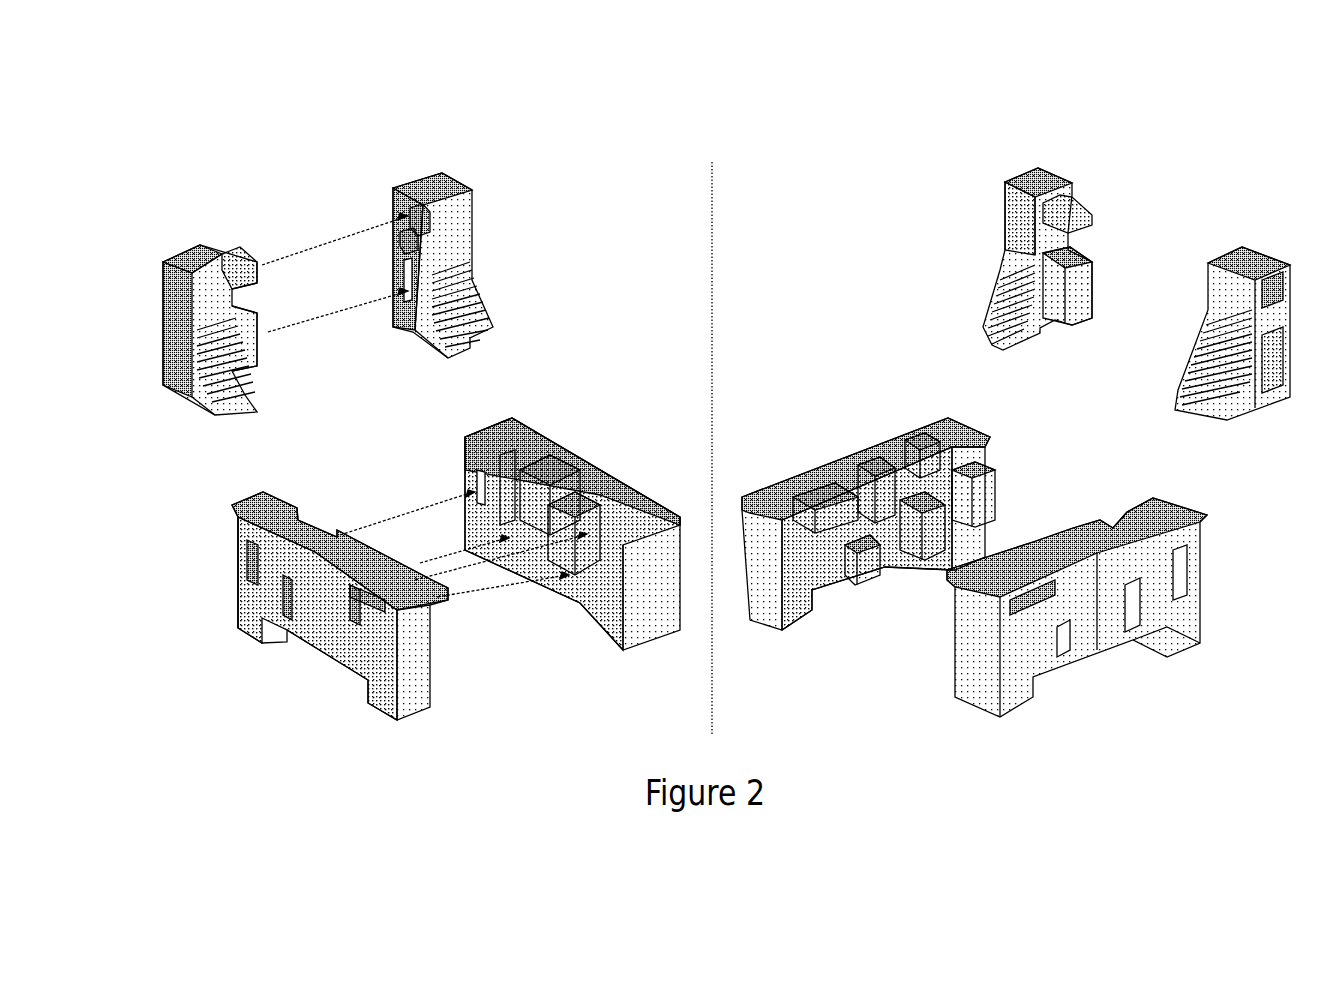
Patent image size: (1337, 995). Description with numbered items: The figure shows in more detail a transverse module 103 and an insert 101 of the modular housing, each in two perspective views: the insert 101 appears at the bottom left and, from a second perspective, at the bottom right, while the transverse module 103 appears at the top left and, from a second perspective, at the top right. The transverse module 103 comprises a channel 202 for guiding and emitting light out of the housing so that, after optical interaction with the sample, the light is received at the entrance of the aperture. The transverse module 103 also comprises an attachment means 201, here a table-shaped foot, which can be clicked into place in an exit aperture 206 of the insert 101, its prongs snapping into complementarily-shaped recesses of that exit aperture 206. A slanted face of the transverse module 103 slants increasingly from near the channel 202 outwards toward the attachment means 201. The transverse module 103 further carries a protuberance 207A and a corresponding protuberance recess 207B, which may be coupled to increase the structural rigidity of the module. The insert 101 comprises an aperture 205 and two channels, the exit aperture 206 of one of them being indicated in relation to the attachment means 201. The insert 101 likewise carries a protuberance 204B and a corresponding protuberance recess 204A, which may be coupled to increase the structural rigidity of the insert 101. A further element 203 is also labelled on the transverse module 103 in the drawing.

The insert 101 is at (292, 684).
The transverse module 103 is at (522, 238).
The attachment means 201 is at (250, 412).
The channel 202 is at (413, 237).
The second clamp block 203 is at (467, 292).
The protuberance recess 204A is at (607, 547).
The protuberance 204B is at (820, 538).
The aperture 205 is at (872, 457).
The exit aperture 206 is at (928, 442).
The protuberance 207A is at (1077, 202).
The protuberance recess 207B is at (417, 213).